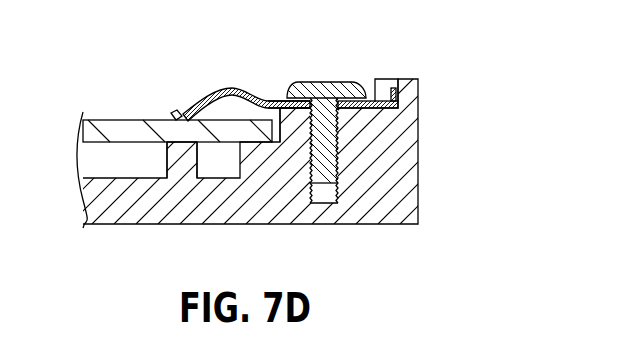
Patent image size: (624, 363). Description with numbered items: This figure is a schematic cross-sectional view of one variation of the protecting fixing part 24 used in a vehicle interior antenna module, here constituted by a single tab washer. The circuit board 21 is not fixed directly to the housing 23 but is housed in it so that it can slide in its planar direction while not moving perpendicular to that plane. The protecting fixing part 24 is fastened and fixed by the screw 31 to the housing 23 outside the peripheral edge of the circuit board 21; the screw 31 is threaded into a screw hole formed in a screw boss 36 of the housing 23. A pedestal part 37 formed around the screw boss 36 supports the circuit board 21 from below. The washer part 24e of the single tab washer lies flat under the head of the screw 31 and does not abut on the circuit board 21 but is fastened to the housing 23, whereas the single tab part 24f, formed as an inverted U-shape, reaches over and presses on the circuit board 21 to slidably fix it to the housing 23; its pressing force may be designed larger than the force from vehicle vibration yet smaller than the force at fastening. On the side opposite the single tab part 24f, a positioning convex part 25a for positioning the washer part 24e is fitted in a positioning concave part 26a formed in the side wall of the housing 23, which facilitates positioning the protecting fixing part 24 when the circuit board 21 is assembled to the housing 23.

The circuit board 21 is at (125, 133).
The housing 23 is at (363, 207).
The protecting fixing part 24 is at (245, 85).
The washer part 24e is at (272, 98).
The single tab part 24f is at (172, 112).
The positioning convex part 25a is at (391, 93).
The positioning concave part 26a is at (398, 92).
The screw 31 is at (330, 96).
The screw boss 36 is at (295, 113).
The pedestal part 37 is at (181, 148).